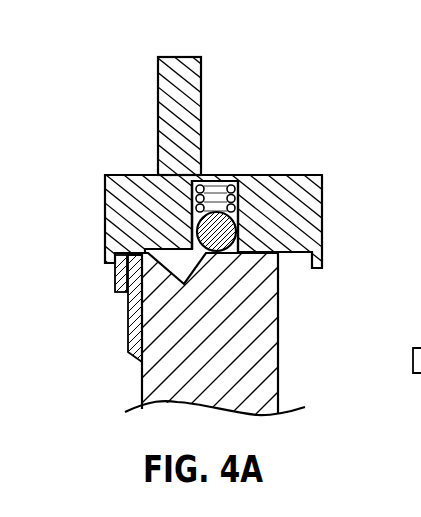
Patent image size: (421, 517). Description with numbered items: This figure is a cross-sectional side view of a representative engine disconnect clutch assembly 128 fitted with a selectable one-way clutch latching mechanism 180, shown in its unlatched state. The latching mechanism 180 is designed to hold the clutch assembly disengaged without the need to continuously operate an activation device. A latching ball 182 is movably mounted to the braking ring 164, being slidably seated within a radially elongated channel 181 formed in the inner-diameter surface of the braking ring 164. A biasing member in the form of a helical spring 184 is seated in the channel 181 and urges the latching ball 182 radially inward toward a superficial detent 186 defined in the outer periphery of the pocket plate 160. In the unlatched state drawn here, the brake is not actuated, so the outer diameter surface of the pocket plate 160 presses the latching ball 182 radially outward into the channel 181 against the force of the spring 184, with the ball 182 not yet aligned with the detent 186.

The engine disconnect clutch assembly 128 is at (316, 115).
The pocket plate 160 is at (267, 346).
The braking ring 164 is at (320, 187).
The latching mechanism 180 is at (262, 196).
The radially elongated channel 181 is at (219, 192).
The latching ball 182 is at (190, 218).
The helical spring 184 is at (192, 208).
The superficial detent 186 is at (178, 274).